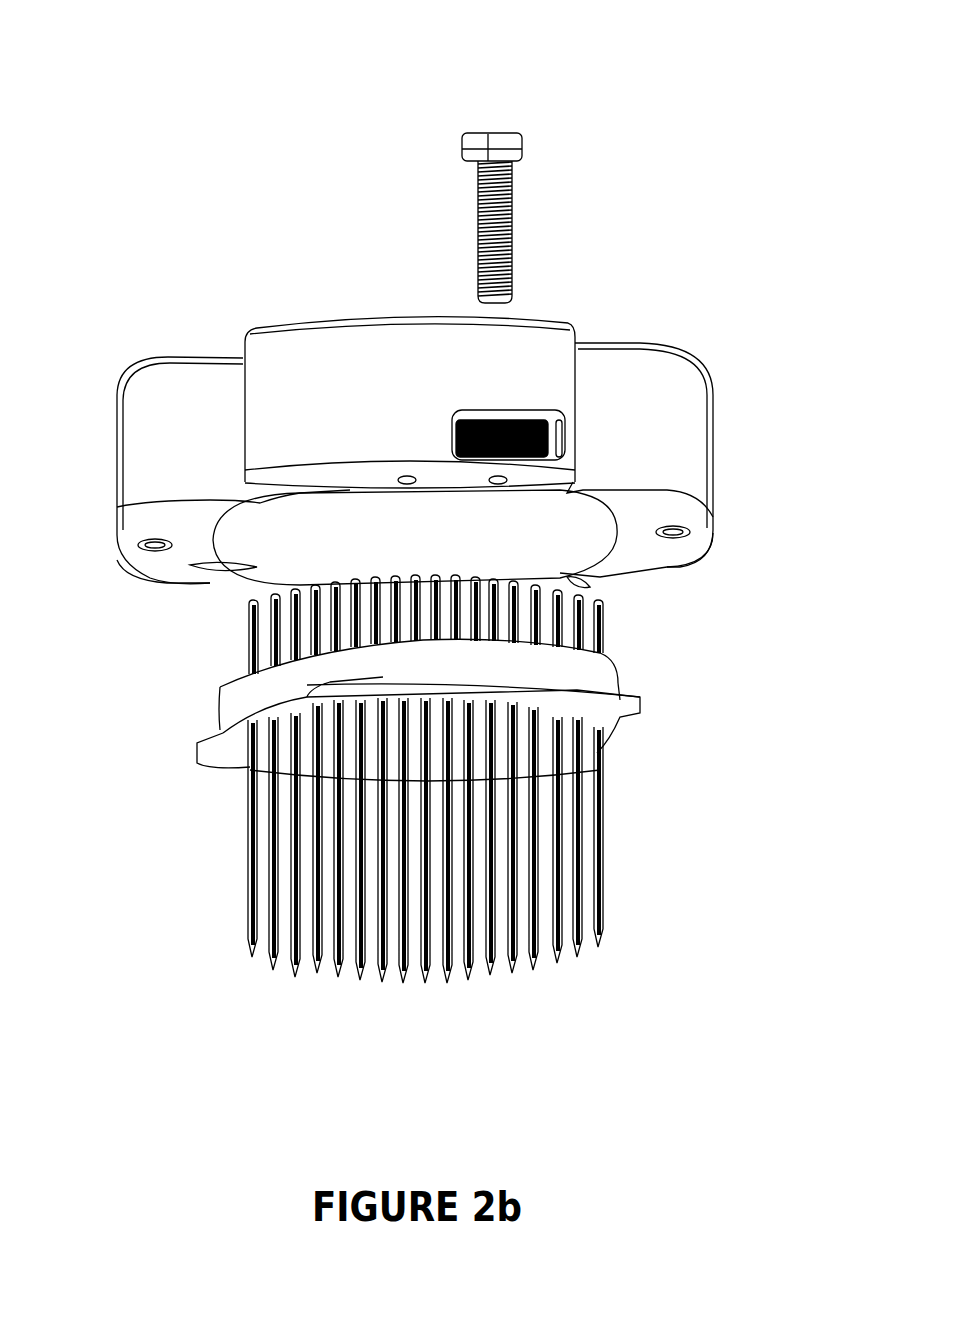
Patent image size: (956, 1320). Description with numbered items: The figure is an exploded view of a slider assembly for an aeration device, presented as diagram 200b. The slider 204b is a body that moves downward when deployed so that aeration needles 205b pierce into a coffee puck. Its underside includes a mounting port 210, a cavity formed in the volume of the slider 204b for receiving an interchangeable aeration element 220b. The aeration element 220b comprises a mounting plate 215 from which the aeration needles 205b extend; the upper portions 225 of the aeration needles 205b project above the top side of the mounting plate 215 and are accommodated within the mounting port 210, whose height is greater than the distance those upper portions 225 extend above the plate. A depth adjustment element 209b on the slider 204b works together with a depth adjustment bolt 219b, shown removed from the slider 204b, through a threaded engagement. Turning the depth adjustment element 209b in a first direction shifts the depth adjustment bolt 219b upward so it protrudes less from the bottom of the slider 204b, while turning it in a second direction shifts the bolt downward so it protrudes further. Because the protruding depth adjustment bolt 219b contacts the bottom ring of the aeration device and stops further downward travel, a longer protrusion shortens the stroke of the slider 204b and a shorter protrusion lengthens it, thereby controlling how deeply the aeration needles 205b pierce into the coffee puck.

The diagram 200b is at (152, 64).
The depth adjustment bolt 219b is at (503, 139).
The slider 204b is at (700, 447).
The depth adjustment element 209b is at (517, 437).
The mounting port 210 is at (278, 548).
The upper portions 225 is at (597, 643).
The mounting plate 215 is at (608, 687).
The interchangeable aeration element 220b is at (213, 802).
The aeration needles 205b is at (655, 872).